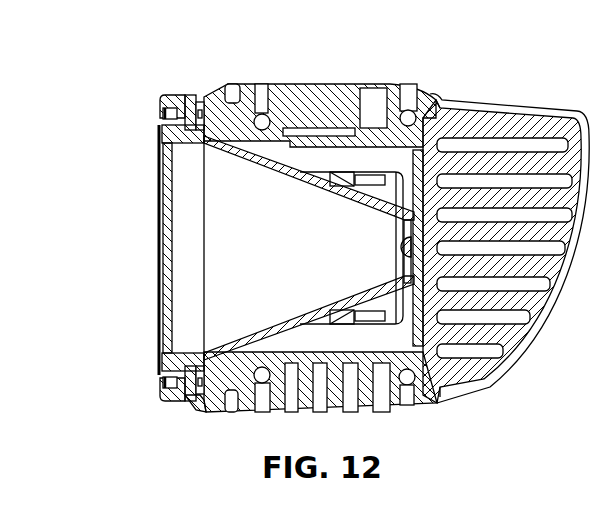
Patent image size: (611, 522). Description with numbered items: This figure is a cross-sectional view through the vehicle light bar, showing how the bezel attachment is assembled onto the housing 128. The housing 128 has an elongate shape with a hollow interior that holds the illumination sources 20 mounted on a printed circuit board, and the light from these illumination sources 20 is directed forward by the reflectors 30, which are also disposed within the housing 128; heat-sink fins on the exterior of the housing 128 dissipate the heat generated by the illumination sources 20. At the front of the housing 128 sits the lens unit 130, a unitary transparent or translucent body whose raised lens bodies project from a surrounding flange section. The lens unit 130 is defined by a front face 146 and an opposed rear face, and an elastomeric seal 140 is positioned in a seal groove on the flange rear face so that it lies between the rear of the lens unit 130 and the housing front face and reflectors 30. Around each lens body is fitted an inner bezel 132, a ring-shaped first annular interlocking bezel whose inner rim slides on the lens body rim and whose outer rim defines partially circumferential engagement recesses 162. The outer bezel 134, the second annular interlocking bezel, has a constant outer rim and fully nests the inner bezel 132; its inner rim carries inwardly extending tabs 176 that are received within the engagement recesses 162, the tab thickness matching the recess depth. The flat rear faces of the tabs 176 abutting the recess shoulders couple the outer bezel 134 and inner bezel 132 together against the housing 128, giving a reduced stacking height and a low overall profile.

The illumination source 20 is at (400, 243).
The reflector 30 is at (330, 183).
The housing 128 is at (522, 113).
The lens unit 130 is at (200, 105).
The inner bezel 132 is at (181, 93).
The outer bezel 134 is at (170, 100).
The elastomeric seal 140 is at (226, 100).
The front face 146 is at (193, 398).
The engagement recess 162 is at (160, 128).
The tab 176 is at (172, 112).